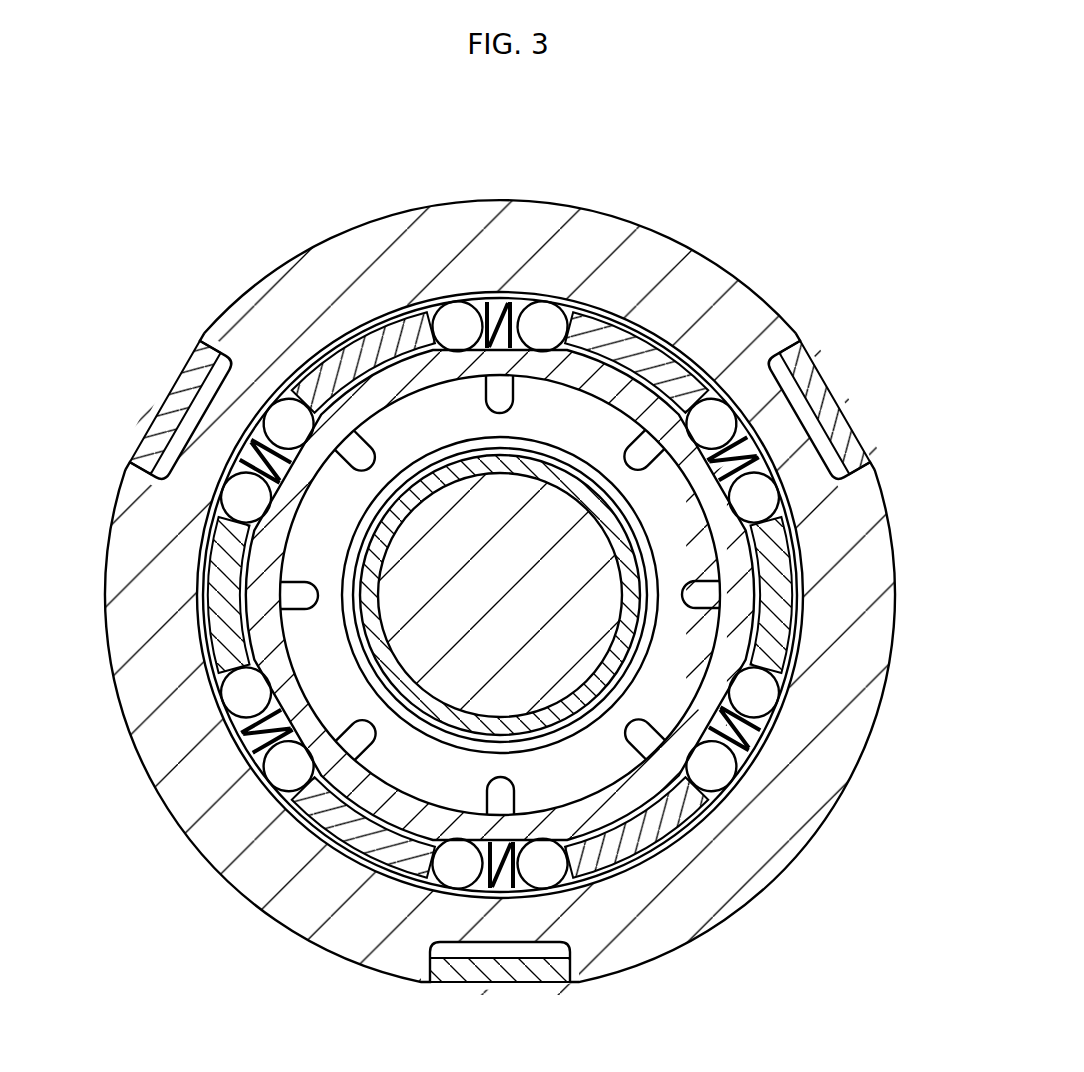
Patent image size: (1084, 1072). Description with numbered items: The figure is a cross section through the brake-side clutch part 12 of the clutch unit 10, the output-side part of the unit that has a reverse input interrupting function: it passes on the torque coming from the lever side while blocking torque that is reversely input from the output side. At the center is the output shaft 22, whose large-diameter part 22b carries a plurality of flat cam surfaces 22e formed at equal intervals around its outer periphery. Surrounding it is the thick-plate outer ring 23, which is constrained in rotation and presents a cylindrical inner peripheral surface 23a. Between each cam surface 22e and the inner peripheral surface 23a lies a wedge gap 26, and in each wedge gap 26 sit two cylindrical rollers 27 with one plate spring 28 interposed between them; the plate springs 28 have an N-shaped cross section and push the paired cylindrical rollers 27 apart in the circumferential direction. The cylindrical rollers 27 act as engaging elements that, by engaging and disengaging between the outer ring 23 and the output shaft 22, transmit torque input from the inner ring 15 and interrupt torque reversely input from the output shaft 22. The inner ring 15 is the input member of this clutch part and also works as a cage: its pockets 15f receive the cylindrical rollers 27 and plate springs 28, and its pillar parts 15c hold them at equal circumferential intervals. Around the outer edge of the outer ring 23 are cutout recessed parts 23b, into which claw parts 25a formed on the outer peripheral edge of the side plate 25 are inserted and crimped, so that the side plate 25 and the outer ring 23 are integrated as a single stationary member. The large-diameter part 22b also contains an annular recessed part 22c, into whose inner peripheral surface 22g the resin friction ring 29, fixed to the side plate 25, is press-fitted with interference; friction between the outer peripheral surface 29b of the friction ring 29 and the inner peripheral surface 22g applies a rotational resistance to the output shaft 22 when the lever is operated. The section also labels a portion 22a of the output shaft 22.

The clutch unit 10 is at (814, 238).
The brake-side clutch part 12 is at (238, 292).
The inner ring 15 is at (613, 321).
The pillar parts 15c is at (350, 340).
The pockets 15f is at (655, 800).
The output shaft 22 is at (499, 665).
The hub portion 22a is at (540, 680).
The large-diameter part 22b is at (655, 790).
The annular recessed part 22c is at (305, 601).
The cam surfaces 22e is at (245, 448).
The inner peripheral surface 22g is at (712, 550).
The outer ring 23 is at (708, 257).
The cylindrical inner peripheral surface 23a is at (218, 567).
The cutout recessed parts 23b is at (772, 360).
The side plate 25 is at (455, 882).
The claw parts 25a is at (190, 376).
The wedge gaps 26 is at (742, 422).
The cylindrical rollers 27 is at (500, 597).
The plate springs 28 is at (497, 348).
The friction ring 29 is at (500, 567).
The outer peripheral surface 29b is at (440, 392).